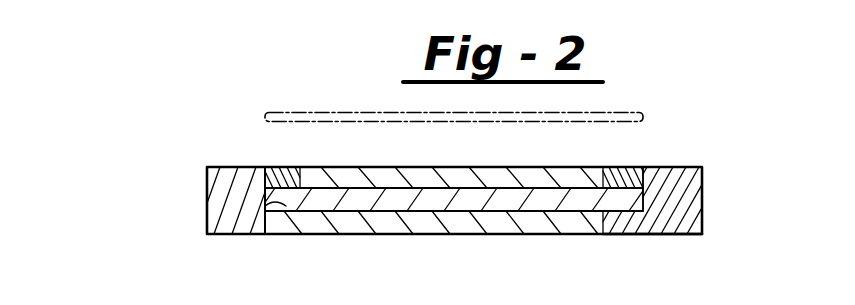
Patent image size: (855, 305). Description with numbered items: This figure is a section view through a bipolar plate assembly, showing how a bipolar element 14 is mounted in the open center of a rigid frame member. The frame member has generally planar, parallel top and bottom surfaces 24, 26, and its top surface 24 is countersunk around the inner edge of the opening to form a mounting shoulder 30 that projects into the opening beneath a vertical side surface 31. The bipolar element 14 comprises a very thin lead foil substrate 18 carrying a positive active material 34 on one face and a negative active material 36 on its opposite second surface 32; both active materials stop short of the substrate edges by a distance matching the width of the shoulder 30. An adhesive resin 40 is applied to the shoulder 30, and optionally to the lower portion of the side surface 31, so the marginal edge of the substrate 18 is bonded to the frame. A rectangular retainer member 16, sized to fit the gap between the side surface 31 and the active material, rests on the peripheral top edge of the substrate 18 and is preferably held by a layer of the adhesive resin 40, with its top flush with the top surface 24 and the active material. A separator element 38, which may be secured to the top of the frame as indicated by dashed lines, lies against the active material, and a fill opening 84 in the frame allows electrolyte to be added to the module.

The bipolar element 14 is at (178, 200).
The retainer member 16 is at (613, 168).
The substrate 18 is at (645, 204).
The top surface 24 is at (655, 167).
The bottom surface 26 is at (682, 235).
The mounting shoulder 30 is at (697, 168).
The vertical side surface 31 is at (292, 192).
The second surface 32 is at (606, 214).
The positive active material 34 is at (328, 168).
The negative active material 36 is at (356, 222).
The separator element 38 is at (425, 113).
The adhesive resin 40 is at (273, 210).
The fill openings 84 is at (262, 174).